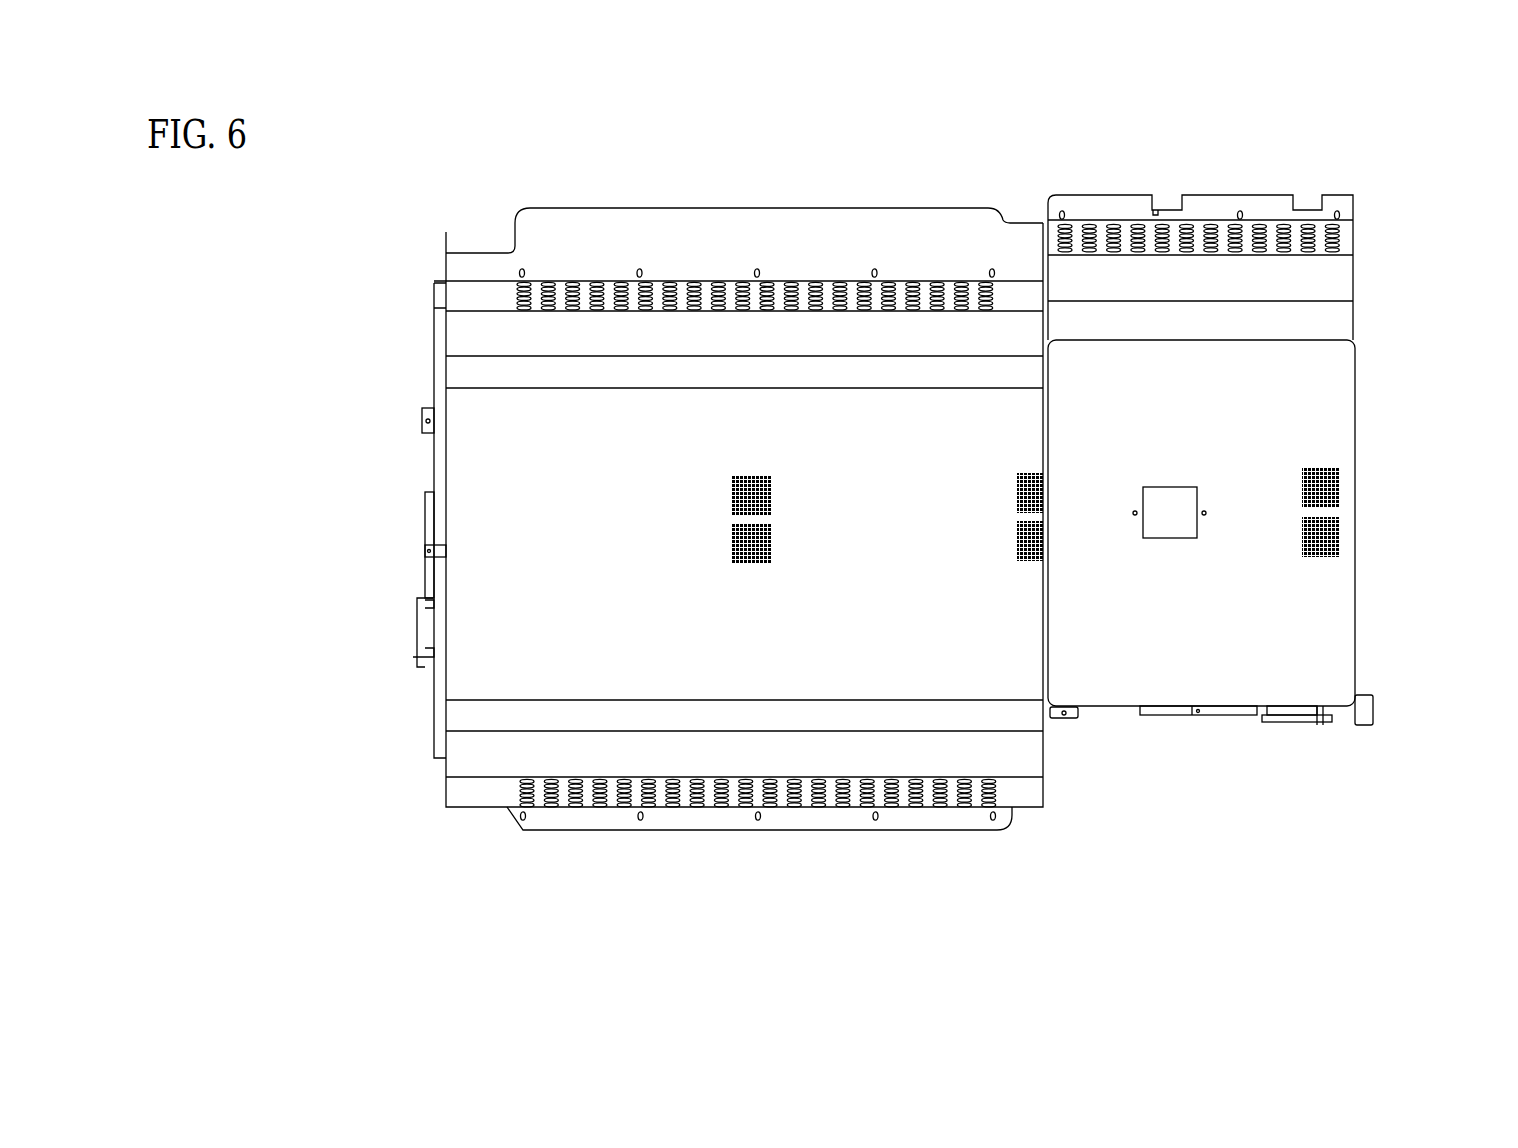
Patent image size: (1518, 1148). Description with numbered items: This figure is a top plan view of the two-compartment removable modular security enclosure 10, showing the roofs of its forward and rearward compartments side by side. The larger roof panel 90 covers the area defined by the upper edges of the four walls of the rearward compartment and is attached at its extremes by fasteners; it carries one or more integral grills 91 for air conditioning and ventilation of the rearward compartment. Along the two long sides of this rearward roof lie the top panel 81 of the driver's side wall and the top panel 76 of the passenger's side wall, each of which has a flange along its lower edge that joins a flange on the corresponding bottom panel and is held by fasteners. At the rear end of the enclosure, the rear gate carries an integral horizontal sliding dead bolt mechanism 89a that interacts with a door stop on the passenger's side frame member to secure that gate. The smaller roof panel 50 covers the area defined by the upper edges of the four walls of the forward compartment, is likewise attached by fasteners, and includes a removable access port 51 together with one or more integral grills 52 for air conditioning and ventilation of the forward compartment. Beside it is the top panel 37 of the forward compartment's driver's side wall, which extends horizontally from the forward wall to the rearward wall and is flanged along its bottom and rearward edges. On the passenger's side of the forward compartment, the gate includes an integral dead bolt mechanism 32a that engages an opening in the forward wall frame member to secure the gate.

The removable modular security enclosure 10 is at (787, 902).
The dead bolt mechanism 32a is at (1297, 728).
The top panel 37 is at (1323, 285).
The roof panel 50 is at (1330, 636).
The removable access port 51 is at (1167, 513).
The integral grills 52 is at (1345, 496).
The top panel 76 is at (1022, 792).
The top panel 81 is at (903, 237).
The horizontal sliding dead bolt mechanism 89a is at (408, 642).
The roof panel 90 is at (470, 678).
The integral grills 91 is at (1008, 545).